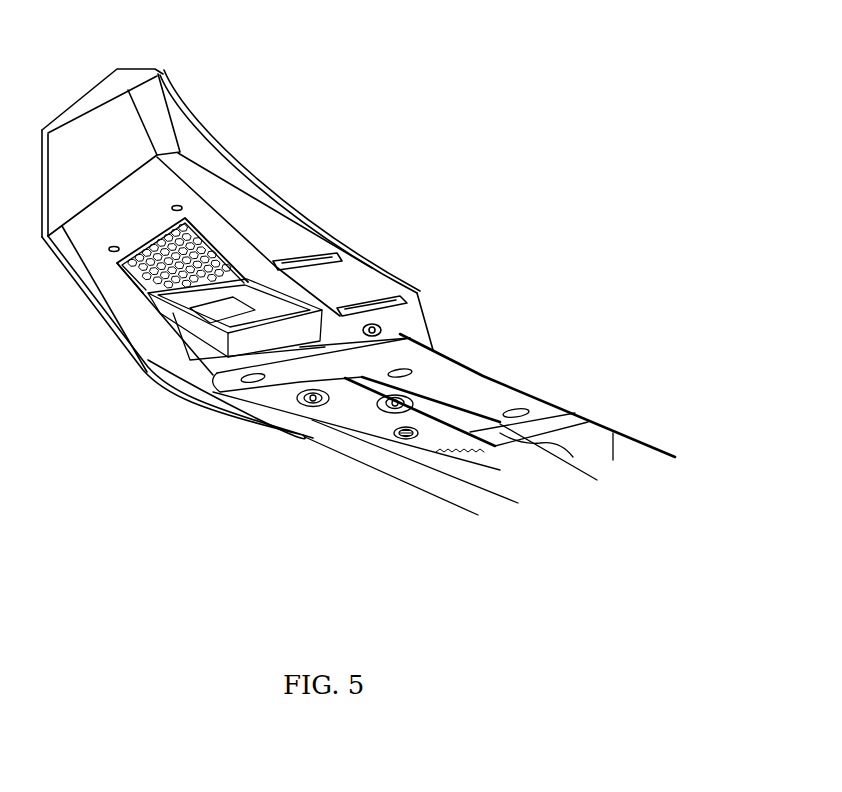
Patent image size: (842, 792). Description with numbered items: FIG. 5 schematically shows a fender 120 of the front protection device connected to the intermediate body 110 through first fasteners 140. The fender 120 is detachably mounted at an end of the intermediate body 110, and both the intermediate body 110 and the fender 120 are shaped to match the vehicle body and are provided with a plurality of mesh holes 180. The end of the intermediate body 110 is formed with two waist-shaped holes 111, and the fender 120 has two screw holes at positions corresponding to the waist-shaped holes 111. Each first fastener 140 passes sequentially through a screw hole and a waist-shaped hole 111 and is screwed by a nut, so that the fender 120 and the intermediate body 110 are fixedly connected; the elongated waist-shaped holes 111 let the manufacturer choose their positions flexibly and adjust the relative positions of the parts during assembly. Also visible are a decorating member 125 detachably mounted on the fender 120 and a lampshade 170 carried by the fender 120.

The intermediate body 110 is at (557, 413).
The waist-shaped hole 111 is at (420, 375).
The fender 120 is at (70, 143).
The decorating member 125 is at (180, 350).
The first fastener 140 is at (403, 440).
The lampshade 170 is at (168, 345).
The mesh hole 180 is at (112, 263).